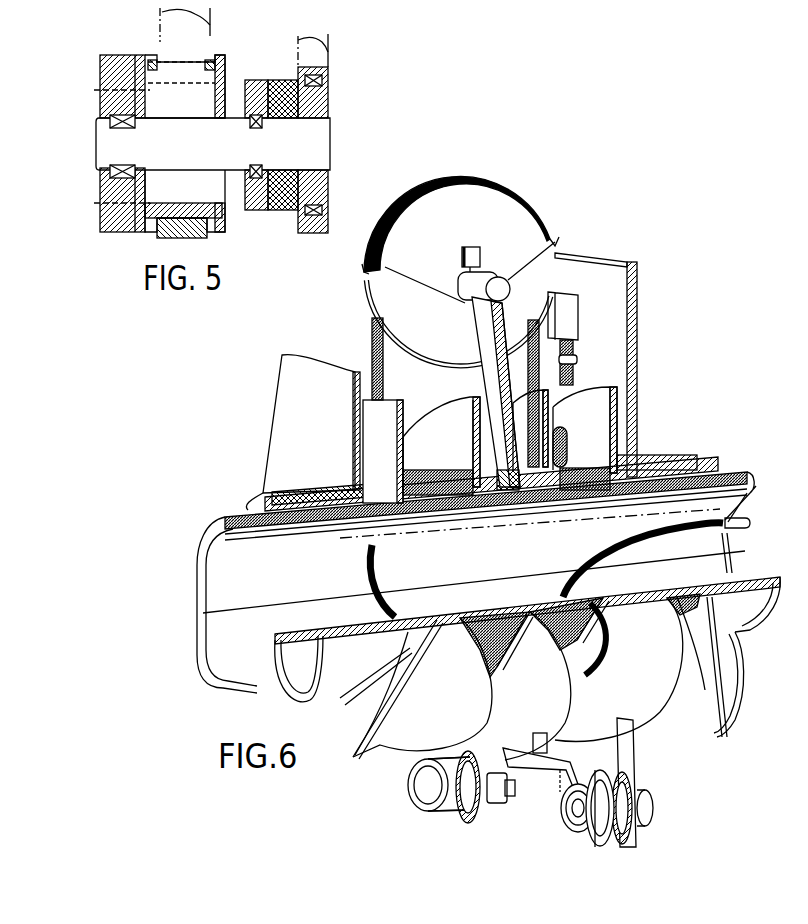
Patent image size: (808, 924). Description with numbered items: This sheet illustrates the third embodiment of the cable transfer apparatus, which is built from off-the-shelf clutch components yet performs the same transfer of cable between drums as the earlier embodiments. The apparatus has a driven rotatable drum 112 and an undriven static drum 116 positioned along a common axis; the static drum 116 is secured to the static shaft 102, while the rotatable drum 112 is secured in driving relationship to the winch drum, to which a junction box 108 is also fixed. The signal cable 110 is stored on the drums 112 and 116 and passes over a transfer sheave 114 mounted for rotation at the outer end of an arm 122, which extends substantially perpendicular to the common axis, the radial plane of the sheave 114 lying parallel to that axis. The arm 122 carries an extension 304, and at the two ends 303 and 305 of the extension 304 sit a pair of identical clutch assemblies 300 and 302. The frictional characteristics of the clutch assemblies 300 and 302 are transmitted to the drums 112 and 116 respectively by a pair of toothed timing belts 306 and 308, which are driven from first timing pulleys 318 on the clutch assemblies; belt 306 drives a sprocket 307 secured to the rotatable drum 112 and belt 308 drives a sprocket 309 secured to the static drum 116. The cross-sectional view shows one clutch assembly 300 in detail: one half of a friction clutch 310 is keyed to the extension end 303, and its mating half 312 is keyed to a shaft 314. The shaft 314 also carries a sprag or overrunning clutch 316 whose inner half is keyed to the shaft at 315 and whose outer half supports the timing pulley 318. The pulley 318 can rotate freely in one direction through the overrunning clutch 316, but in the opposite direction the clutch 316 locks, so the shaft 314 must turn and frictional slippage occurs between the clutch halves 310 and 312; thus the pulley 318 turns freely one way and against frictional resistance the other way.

In FIG. 6, the static shaft 102 is at (252, 688).
In FIG. 6, the junction box 108 is at (567, 305).
In FIG. 6, the signal cable 110 is at (738, 517).
In FIG. 6, the driven rotatable drum 112 is at (603, 405).
In FIG. 6, the transfer sheave 114 is at (517, 216).
In FIG. 6, the undriven static drum 116 is at (383, 436).
In FIG. 6, the arm 122 is at (565, 340).
In FIG. 5, the clutch assembly 300 is at (356, 146).
In FIG. 6, the clutch assembly 300 is at (625, 858).
In FIG. 6, the clutch assembly 302 is at (463, 826).
In FIG. 5, the end of extension 303 is at (332, 44).
In FIG. 6, the end of extension 303 is at (562, 815).
In FIG. 6, the extension of arm 304 is at (548, 745).
In FIG. 6, the end of extension 305 is at (503, 748).
In FIG. 5, the toothed timing belt 306 is at (212, 30).
In FIG. 6, the toothed timing belt 306 is at (634, 758).
In FIG. 6, the sprocket 307 is at (587, 660).
In FIG. 6, the toothed timing belt 308 is at (515, 788).
In FIG. 6, the sprocket 309 is at (472, 452).
In FIG. 5, the friction clutch half 310 is at (314, 193).
In FIG. 6, the friction clutch half 310 is at (648, 805).
In FIG. 5, the mating friction clutch half 312 is at (246, 208).
In FIG. 5, the shaft 314 is at (320, 130).
In FIG. 5, the key 315 is at (99, 172).
In FIG. 5, the overrunning clutch 316 is at (99, 200).
In FIG. 6, the overrunning clutch 316 is at (600, 845).
In FIG. 5, the timing pulley 318 is at (215, 66).
In FIG. 6, the timing pulley 318 is at (632, 838).